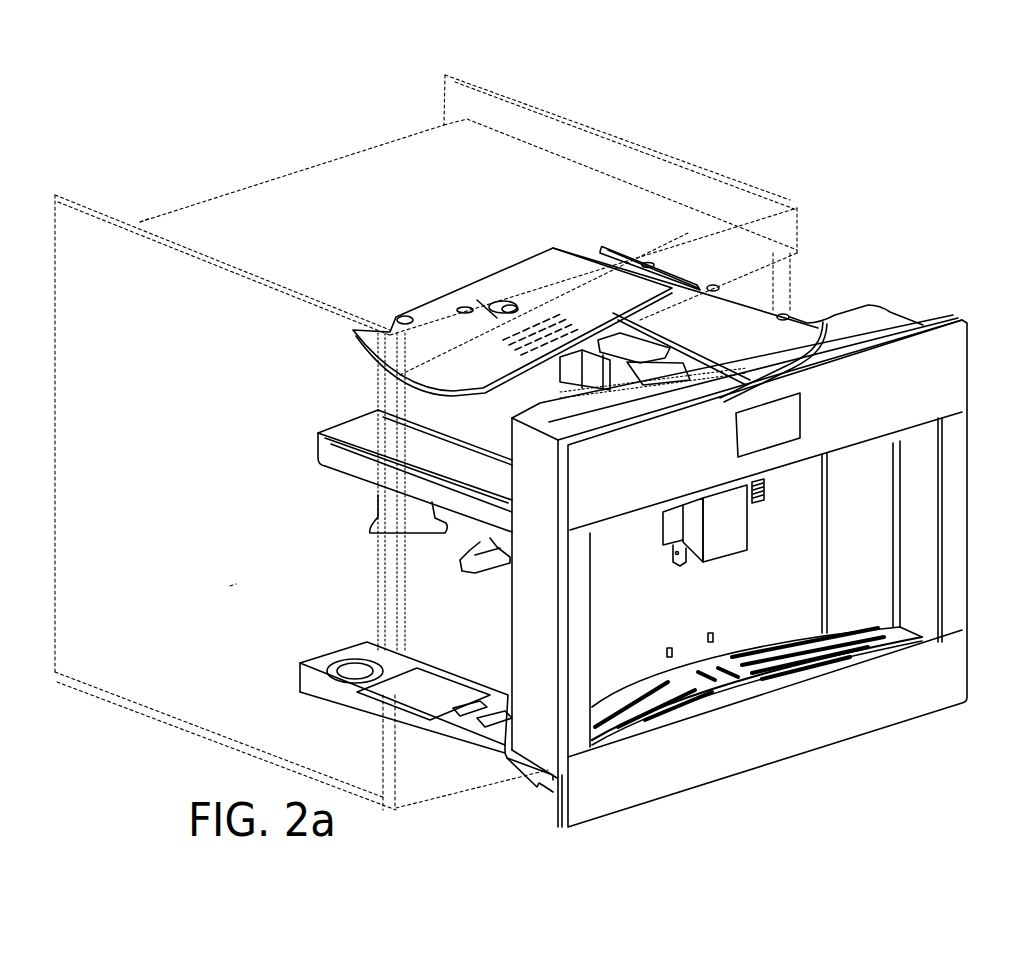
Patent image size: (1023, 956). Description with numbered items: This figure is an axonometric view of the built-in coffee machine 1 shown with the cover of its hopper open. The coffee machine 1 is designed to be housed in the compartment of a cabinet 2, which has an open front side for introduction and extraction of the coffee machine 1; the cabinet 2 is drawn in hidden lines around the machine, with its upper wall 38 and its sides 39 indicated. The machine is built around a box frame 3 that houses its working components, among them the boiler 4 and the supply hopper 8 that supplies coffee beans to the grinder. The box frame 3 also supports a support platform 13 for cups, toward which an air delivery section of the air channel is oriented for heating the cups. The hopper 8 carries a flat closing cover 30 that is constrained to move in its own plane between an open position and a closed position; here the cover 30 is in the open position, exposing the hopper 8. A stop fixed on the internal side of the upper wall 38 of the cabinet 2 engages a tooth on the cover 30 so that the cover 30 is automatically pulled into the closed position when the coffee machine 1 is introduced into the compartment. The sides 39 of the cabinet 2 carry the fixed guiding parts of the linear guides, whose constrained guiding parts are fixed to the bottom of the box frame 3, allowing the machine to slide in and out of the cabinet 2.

The built-in coffee machine 1 is at (940, 352).
The cabinet 2 is at (378, 158).
The box frame 3 is at (837, 316).
The boiler 4 is at (738, 320).
The supply hopper 8 is at (667, 393).
The support platform 13 is at (468, 473).
The flat closing cover 30 is at (490, 362).
The upper wall 38 is at (298, 238).
The sides 39 is at (785, 277).